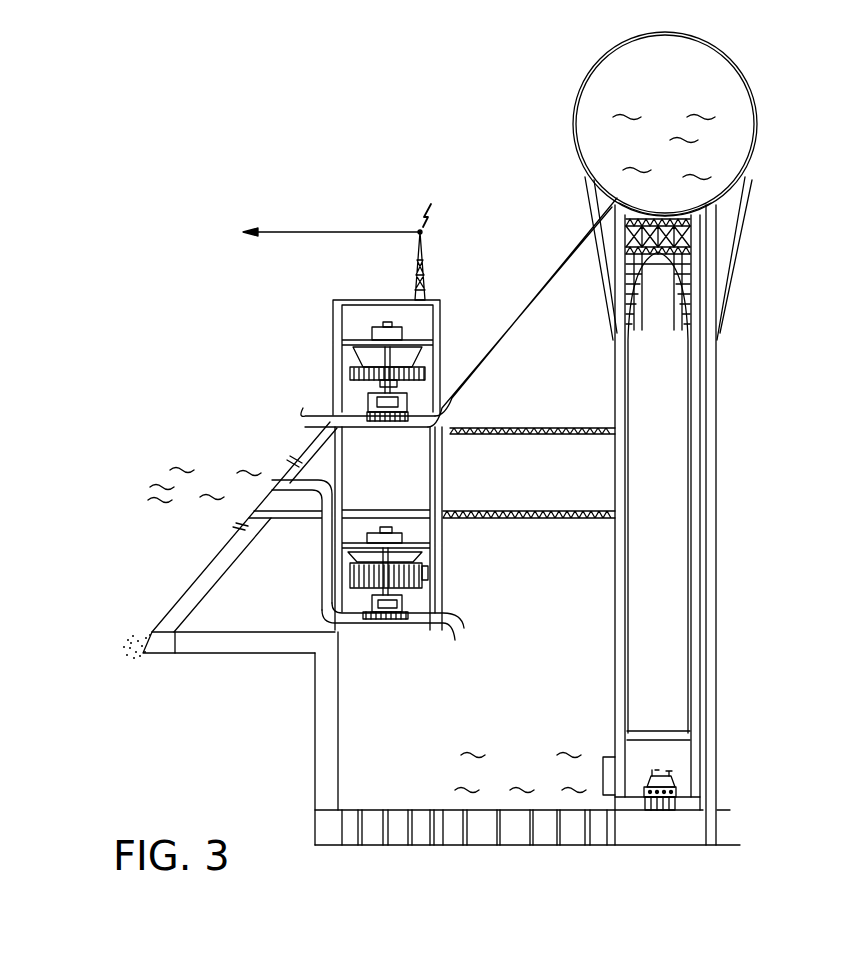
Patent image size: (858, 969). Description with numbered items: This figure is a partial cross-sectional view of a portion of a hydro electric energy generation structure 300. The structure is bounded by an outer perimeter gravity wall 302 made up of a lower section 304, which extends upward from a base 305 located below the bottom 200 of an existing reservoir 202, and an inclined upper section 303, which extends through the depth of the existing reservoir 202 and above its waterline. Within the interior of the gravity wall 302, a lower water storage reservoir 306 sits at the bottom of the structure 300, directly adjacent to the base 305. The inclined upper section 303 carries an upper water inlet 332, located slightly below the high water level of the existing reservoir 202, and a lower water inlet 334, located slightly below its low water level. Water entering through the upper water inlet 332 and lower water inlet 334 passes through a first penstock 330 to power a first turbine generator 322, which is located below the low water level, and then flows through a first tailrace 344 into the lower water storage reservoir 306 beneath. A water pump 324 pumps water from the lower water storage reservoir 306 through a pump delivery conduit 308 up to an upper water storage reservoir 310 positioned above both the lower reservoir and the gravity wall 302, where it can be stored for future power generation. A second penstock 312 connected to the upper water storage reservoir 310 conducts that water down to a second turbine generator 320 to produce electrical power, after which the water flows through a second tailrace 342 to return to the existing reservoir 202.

The hydro electric energy generation structure 300 is at (275, 86).
The upper water storage reservoir 310 is at (612, 90).
The second penstock 312 is at (568, 258).
The pump delivery conduit 308 is at (718, 372).
The water pump 324 is at (665, 760).
The second turbine generator 320 is at (355, 318).
The second tailrace 342 is at (320, 410).
The first turbine generator 322 is at (412, 533).
The first penstock 330 is at (340, 500).
The upper water inlet 332 is at (275, 490).
The lower water inlet 334 is at (253, 512).
The first tailrace 344 is at (462, 628).
The outer perimeter gravity wall 302 is at (270, 560).
The inclined upper section 303 is at (205, 598).
The existing reservoir 202 is at (200, 529).
The bottom 200 is at (217, 705).
The lower section 304 is at (323, 789).
The base 305 is at (584, 845).
The lower water storage reservoir 306 is at (532, 764).